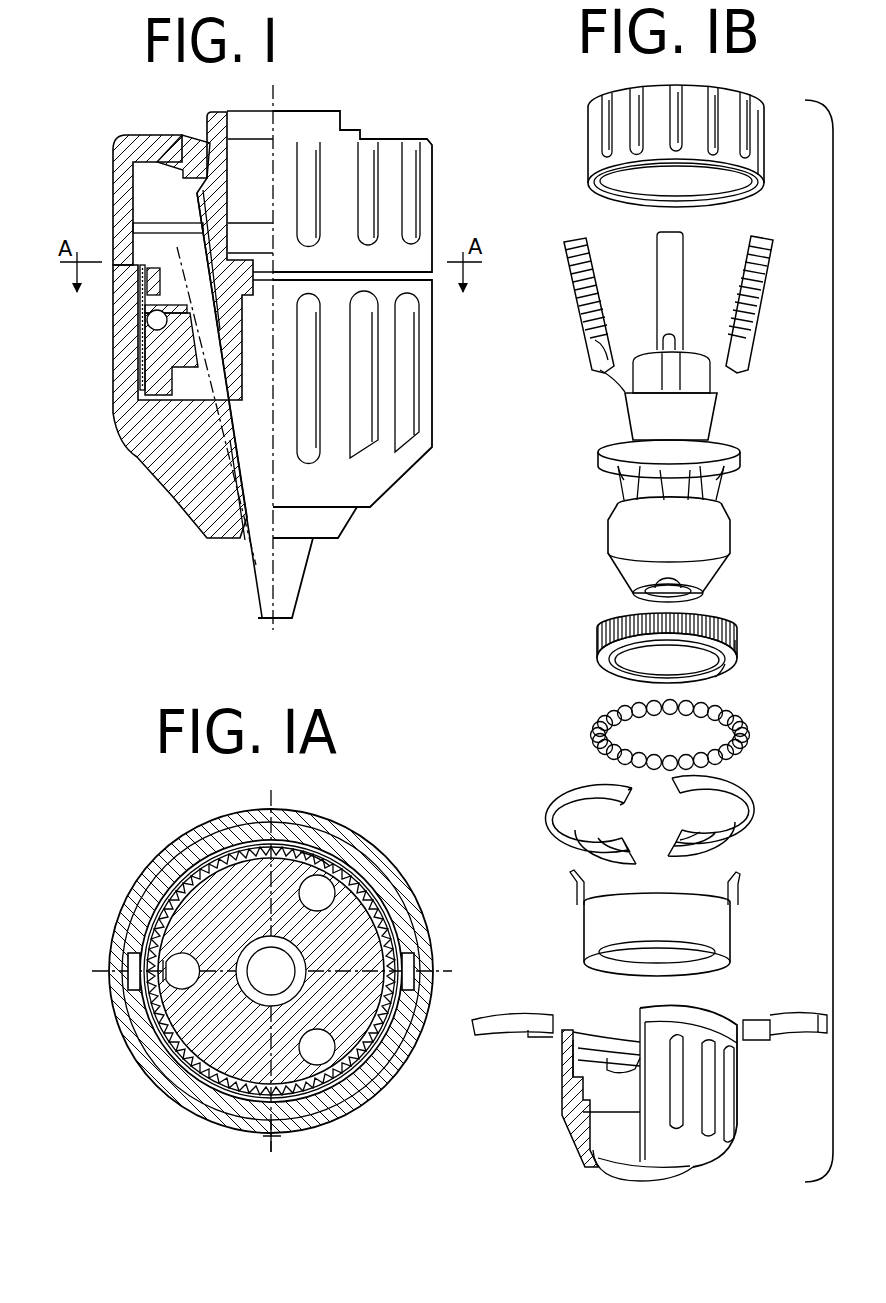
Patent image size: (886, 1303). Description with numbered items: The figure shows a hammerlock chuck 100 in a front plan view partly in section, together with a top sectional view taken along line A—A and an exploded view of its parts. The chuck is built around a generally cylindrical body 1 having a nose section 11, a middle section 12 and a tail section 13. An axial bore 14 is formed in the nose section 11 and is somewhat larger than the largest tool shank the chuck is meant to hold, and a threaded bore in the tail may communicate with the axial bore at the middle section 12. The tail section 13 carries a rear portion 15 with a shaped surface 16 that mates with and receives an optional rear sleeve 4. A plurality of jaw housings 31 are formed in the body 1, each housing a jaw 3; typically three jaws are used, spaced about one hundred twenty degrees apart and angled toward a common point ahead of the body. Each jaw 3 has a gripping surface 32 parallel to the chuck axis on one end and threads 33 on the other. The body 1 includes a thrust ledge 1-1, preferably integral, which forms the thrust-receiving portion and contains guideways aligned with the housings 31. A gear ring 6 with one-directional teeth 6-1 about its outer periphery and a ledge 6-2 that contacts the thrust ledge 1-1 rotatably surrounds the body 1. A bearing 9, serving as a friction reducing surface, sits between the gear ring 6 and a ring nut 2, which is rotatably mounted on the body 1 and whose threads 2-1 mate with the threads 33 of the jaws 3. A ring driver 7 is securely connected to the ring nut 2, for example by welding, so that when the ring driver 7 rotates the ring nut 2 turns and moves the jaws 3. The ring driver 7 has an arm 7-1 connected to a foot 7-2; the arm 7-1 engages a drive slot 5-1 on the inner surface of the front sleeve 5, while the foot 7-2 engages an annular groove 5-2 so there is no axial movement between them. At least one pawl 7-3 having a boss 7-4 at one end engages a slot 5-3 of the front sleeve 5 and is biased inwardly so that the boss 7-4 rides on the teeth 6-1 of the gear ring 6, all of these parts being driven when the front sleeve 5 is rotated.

In FIG. 1, the hammerlock chuck 100 is at (440, 126).
In FIG. 1, the body 1 is at (217, 160).
In FIG. 1B, the body 1 is at (645, 420).
In FIG. 1B, the thrust ledge 1-1 is at (718, 470).
In FIG. 1, the ring nut 2 is at (160, 383).
In FIG. 1B, the ring nut 2 is at (610, 800).
In FIG. 1B, the threads 2-1 is at (672, 845).
In FIG. 1, the jaws 3 is at (213, 327).
In FIG. 1B, the jaws 3 is at (592, 345).
In FIG. 1, the rear sleeve 4 is at (133, 146).
In FIG. 1B, the rear sleeve 4 is at (657, 132).
In FIG. 1, the front sleeve 5 is at (155, 440).
In FIG. 1B, the front sleeve 5 is at (577, 1125).
In FIG. 1B, the drive slot 5-1 is at (577, 1075).
In FIG. 1B, the annular groove 5-2 is at (575, 1040).
In FIG. 1A, the slot 5-3 is at (143, 873).
In FIG. 1B, the slot 5-3 is at (636, 1060).
In FIG. 1, the gear ring 6 is at (165, 300).
In FIG. 1A, the gear ring 6 is at (210, 872).
In FIG. 1B, the gear ring 6 is at (600, 650).
In FIG. 1B, the teeth 6-1 is at (735, 640).
In FIG. 1B, the ledge 6-2 is at (725, 664).
In FIG. 1, the ring driver 7 is at (142, 298).
In FIG. 1A, the ring driver 7 is at (134, 1001).
In FIG. 1B, the ring driver 7 is at (605, 925).
In FIG. 1A, the arm 7-1 is at (112, 1005).
In FIG. 1B, the arm 7-1 is at (737, 905).
In FIG. 1B, the foot 7-2 is at (742, 875).
In FIG. 1A, the pawl 7-3 is at (328, 857).
In FIG. 1B, the pawl 7-3 is at (753, 1040).
In FIG. 1B, the boss 7-4 is at (825, 1028).
In FIG. 1, the bearing 9 is at (163, 380).
In FIG. 1B, the bearing 9 is at (593, 735).
In FIG. 1B, the nose section 11 is at (590, 534).
In FIG. 1B, the middle section 12 is at (752, 438).
In FIG. 1B, the tail section 13 is at (738, 388).
In FIG. 1B, the axial bore 14 is at (652, 590).
In FIG. 1B, the rear portion 15 is at (698, 335).
In FIG. 1B, the shaped surface 16 is at (648, 365).
In FIG. 1A, the jaw housings 31 is at (312, 1052).
In FIG. 1A, the gripping surface 32 is at (325, 893).
In FIG. 1B, the gripping surface 32 is at (610, 375).
In FIG. 1B, the threads 33 is at (762, 283).